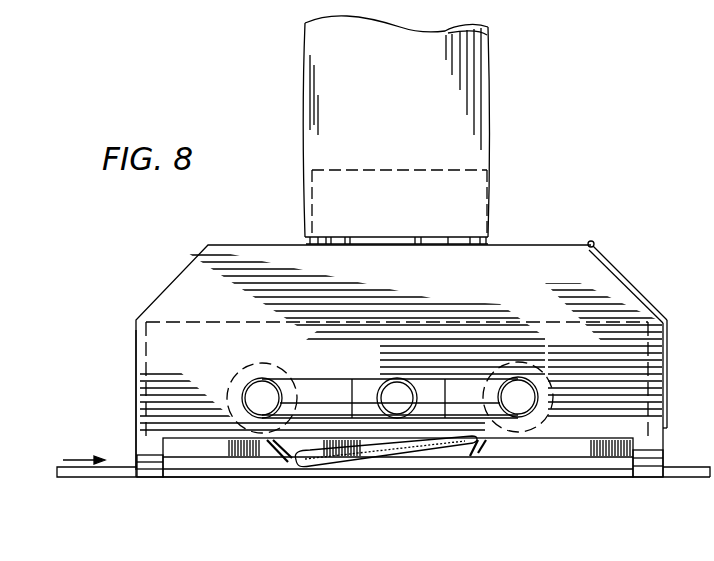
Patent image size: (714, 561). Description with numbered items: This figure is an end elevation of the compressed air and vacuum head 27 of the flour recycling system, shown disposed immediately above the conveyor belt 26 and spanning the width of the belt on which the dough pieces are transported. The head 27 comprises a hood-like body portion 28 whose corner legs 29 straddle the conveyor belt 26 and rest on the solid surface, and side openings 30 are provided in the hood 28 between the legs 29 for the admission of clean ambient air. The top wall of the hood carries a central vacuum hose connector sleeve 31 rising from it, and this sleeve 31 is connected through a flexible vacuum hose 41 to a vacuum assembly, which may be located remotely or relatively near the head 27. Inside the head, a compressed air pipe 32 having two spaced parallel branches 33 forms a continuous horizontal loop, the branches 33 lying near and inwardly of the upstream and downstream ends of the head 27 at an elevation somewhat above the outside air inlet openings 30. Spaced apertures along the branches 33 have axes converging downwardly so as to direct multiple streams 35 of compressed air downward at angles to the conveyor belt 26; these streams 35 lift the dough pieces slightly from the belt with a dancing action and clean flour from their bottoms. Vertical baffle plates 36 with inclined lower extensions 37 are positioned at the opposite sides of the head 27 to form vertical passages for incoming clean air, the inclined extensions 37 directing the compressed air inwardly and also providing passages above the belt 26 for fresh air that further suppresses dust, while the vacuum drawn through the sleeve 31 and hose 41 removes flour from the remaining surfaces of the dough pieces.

The conveyor belt 26 is at (79, 478).
The compressed air and vacuum head 27 is at (560, 244).
The hood-like body portion 28 is at (209, 358).
The corner legs 29 is at (152, 466).
The side openings 30 is at (535, 450).
The vacuum hose connector sleeve 31 is at (457, 240).
The compressed air pipe 32 is at (413, 378).
The pipe branches 33 is at (283, 393).
The streams of compressed air 35 is at (273, 462).
The vertical baffle plates 36 is at (182, 373).
The inclined lower extensions 37 is at (204, 452).
The flexible vacuum hose 41 is at (472, 113).